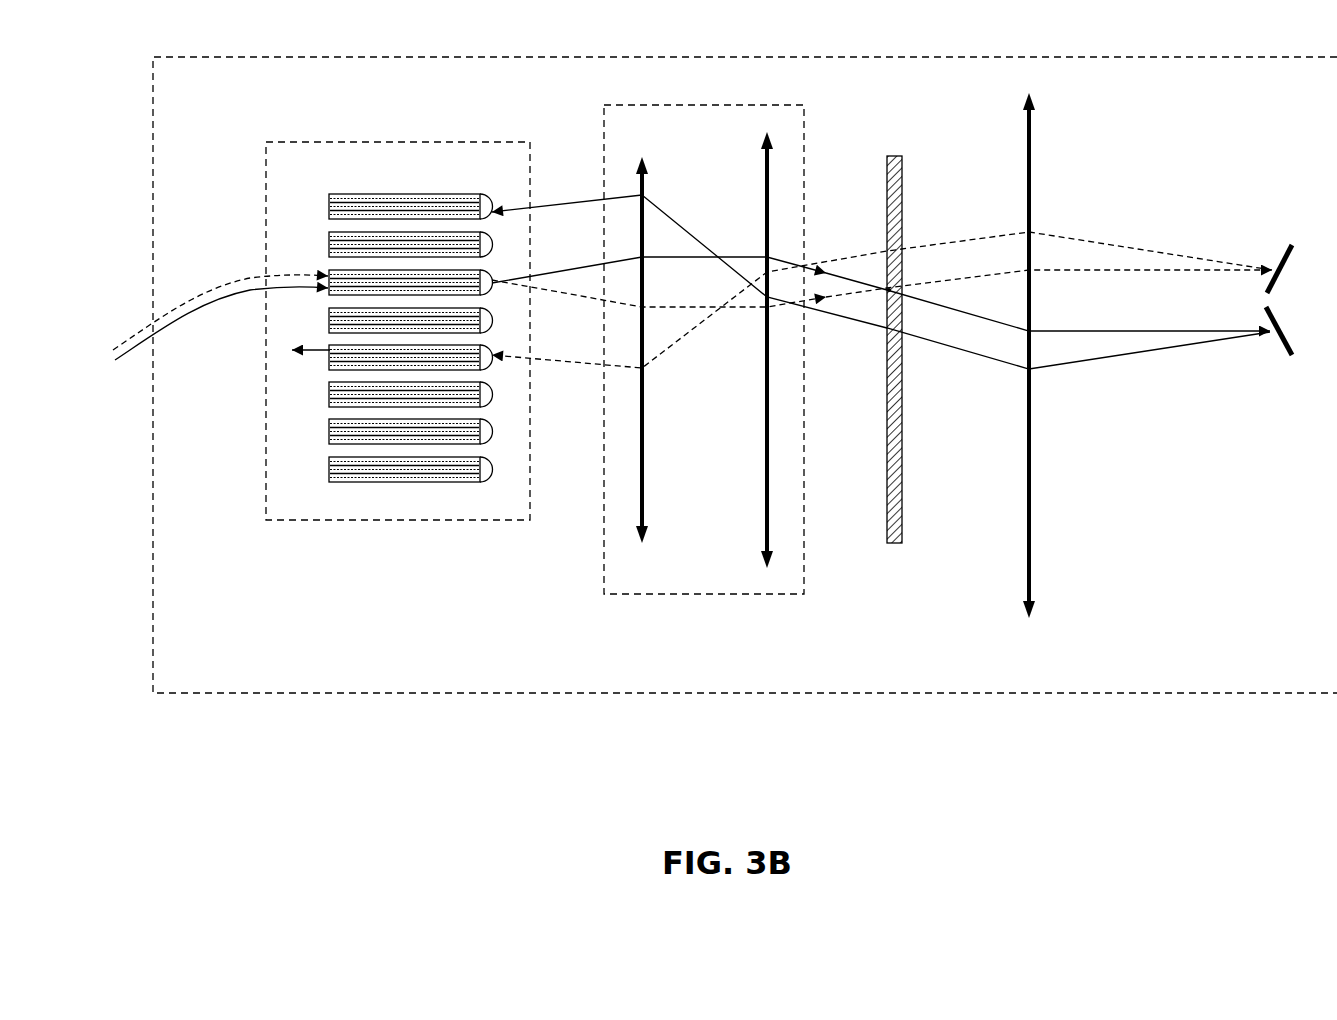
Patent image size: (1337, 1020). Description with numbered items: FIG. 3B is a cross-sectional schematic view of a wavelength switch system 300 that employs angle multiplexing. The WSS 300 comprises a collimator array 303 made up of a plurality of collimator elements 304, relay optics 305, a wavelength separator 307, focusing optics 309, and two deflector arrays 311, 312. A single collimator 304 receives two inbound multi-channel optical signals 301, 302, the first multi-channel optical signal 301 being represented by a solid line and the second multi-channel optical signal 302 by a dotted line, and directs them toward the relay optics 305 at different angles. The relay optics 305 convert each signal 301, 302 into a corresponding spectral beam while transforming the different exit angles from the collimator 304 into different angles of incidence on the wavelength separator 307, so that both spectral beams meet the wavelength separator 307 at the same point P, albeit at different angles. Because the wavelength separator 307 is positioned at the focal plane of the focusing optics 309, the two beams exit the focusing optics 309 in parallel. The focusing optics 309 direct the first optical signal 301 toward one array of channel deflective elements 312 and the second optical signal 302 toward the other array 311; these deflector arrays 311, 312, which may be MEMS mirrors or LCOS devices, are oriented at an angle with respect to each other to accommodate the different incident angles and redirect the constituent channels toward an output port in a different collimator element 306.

The wavelength switch system 300 is at (280, 694).
The first multi-channel optical signal 301 is at (207, 300).
The second multi-channel optical signal 302 is at (206, 288).
The collimator array 303 is at (400, 521).
The collimator element 304 is at (330, 274).
The relay optics 305 is at (705, 595).
The collimator element 306 is at (333, 196).
The wavelength separator 307 is at (895, 544).
The focusing optics 309 is at (1030, 621).
The deflector array 311 is at (1290, 245).
The deflector array 312 is at (1292, 362).
The point P is at (886, 293).